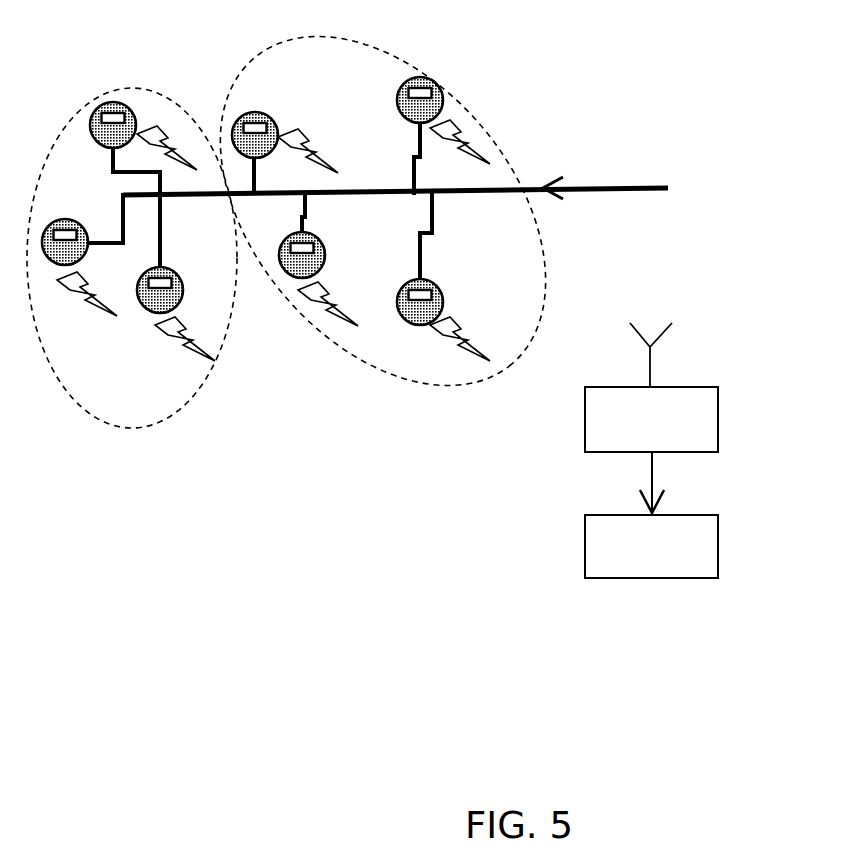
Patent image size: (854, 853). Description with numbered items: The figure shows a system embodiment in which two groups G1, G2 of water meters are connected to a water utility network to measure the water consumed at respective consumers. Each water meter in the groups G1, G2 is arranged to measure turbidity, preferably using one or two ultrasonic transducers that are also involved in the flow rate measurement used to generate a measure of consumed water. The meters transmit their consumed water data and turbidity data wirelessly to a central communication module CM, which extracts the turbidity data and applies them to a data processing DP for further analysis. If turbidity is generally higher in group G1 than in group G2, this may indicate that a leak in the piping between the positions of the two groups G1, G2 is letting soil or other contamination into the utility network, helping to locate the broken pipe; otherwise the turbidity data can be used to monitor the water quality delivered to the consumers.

The first group of water meters G1 is at (132, 280).
The second group of water meters G2 is at (372, 40).
The central communication module CM is at (651, 387).
The data processing DP is at (651, 546).